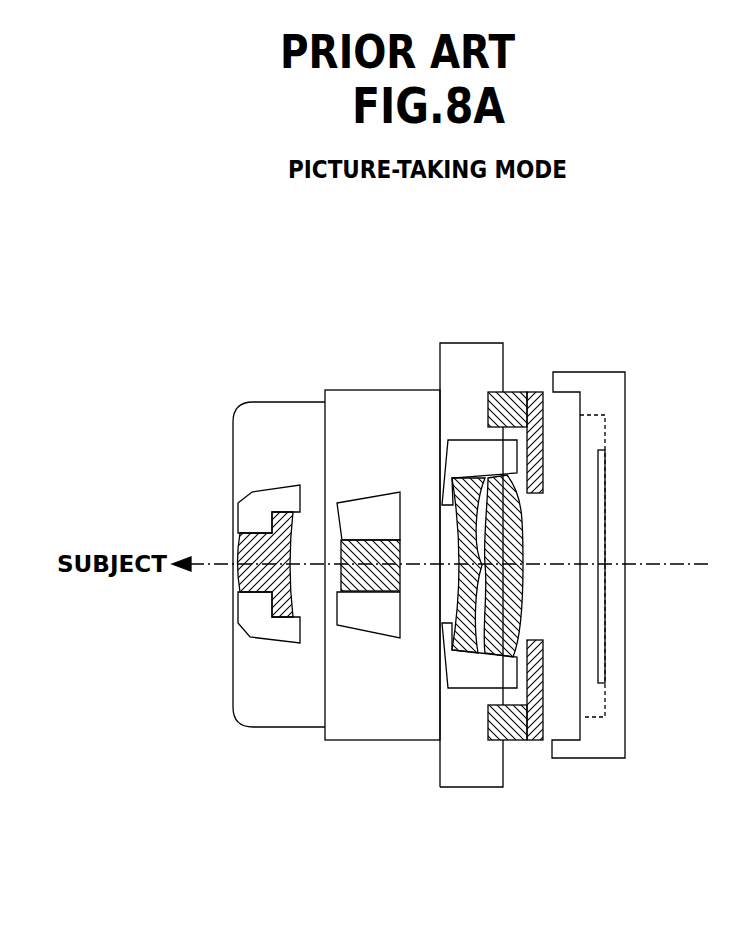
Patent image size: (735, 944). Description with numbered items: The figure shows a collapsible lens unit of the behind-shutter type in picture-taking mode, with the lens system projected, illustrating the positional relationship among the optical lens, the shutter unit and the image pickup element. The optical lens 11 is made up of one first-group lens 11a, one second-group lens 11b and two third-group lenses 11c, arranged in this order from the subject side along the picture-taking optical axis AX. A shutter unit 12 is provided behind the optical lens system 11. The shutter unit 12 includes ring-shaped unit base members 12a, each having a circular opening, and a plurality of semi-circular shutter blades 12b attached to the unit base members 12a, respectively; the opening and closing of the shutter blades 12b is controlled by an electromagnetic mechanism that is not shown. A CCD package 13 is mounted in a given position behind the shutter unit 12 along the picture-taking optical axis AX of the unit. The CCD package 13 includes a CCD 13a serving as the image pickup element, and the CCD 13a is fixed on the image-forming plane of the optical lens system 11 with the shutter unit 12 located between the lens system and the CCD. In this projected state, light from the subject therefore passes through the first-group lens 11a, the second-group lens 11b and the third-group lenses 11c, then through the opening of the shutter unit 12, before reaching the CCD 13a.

The optical lens 11 is at (528, 813).
The first-group lens 11a is at (283, 523).
The second-group lens 11b is at (357, 540).
The third-group lenses 11c is at (485, 517).
The shutter unit 12 is at (578, 560).
The unit base members 12a is at (489, 403).
The shutter blades 12b is at (543, 432).
The CCD package 13 is at (627, 392).
The CCD 13a is at (602, 495).
The picture-taking optical axis AX is at (212, 568).